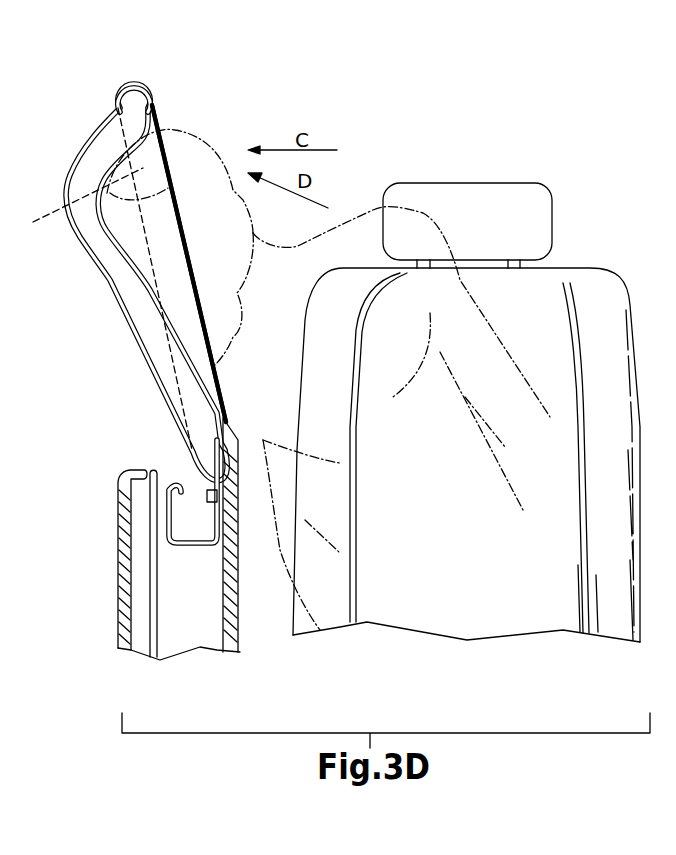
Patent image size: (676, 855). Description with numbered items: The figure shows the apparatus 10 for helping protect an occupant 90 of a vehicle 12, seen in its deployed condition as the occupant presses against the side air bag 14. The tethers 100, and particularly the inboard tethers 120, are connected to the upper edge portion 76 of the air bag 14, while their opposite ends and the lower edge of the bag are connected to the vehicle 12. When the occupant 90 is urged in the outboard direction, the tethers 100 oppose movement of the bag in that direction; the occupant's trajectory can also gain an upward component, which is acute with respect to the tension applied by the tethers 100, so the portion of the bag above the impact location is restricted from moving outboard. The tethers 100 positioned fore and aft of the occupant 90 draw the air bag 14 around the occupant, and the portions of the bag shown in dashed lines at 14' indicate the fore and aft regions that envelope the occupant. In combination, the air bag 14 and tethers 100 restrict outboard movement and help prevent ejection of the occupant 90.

The apparatus 10 is at (168, 443).
The vehicle 12 is at (108, 500).
The side air bag 14 is at (134, 282).
The air bag portions 14' is at (98, 279).
The upper edge portion 76 is at (132, 84).
The tethers 100 is at (178, 200).
The inboard tethers 120 is at (189, 263).
The occupant 90 is at (513, 310).